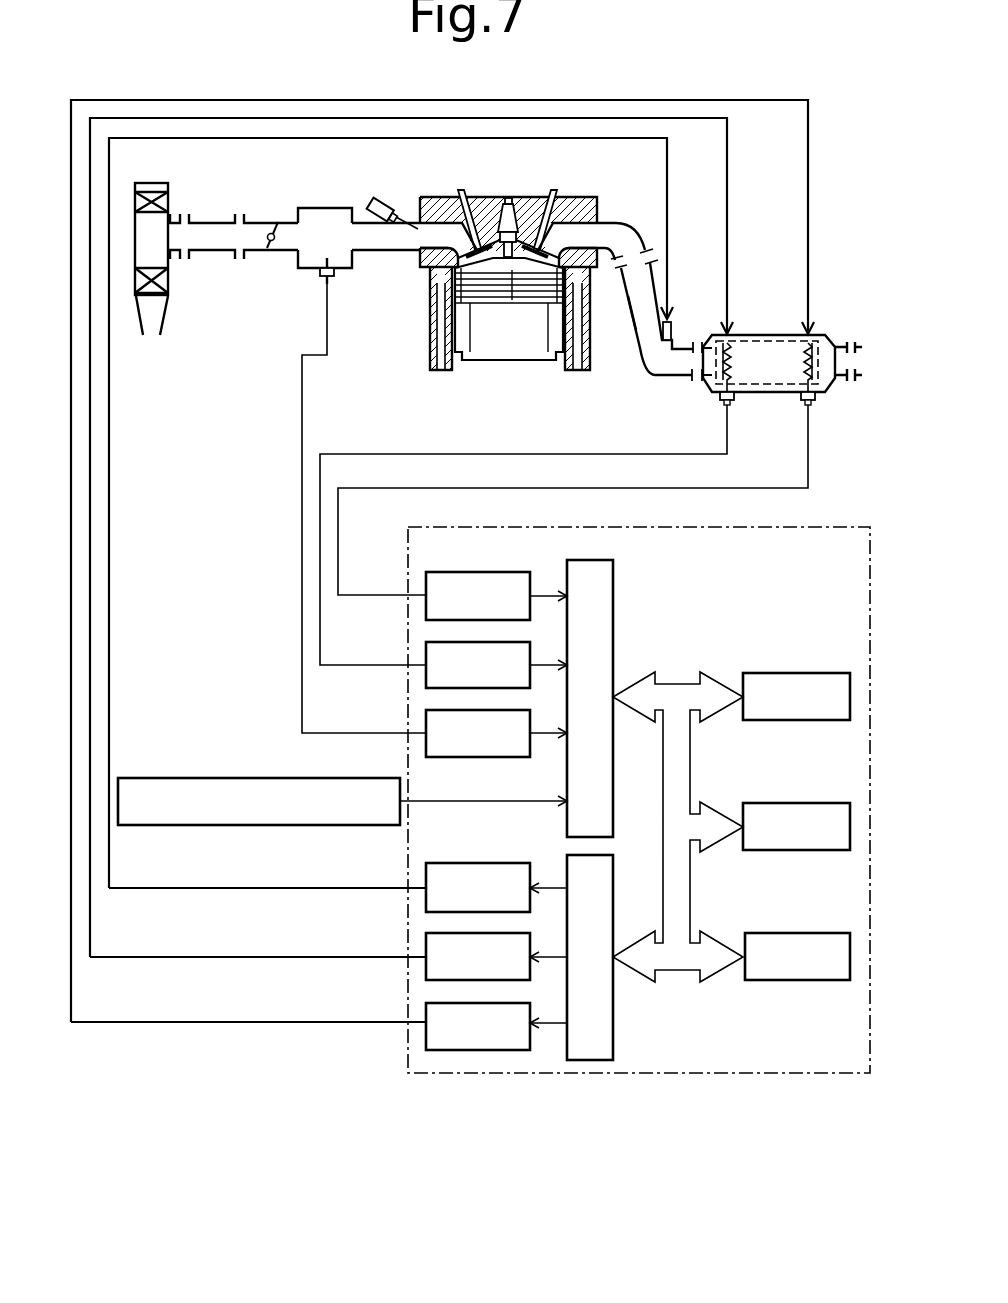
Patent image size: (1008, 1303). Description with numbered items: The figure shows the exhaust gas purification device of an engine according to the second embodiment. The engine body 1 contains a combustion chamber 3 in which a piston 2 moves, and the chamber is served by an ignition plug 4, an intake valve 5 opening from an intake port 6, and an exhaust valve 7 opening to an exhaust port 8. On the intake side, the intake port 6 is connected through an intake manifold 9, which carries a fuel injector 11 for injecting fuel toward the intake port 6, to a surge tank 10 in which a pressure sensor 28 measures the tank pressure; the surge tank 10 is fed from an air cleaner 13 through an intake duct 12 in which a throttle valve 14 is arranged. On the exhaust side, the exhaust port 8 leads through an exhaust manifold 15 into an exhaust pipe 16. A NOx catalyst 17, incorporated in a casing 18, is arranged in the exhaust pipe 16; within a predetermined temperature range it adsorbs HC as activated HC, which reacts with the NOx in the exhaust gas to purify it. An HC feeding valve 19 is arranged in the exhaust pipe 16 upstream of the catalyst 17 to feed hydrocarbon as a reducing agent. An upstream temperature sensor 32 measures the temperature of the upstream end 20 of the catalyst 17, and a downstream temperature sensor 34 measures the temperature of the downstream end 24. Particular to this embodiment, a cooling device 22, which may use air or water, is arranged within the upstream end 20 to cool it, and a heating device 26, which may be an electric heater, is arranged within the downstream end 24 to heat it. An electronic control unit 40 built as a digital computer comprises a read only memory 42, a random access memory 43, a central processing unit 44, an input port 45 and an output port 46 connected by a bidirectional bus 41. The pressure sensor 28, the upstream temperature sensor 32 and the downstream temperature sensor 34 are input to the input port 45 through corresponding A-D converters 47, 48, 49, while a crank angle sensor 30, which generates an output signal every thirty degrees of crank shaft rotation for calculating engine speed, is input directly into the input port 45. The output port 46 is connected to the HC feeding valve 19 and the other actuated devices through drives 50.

The engine body 1 is at (596, 351).
The piston 2 is at (521, 327).
The combustion chamber 3 is at (494, 268).
The ignition plug 4 is at (503, 208).
The intake valve 5 is at (458, 200).
The intake port 6 is at (431, 216).
The exhaust valve 7 is at (553, 200).
The exhaust port 8 is at (574, 226).
The intake manifold 9 is at (383, 251).
The surge tank 10 is at (310, 208).
The fuel injector 11 is at (368, 204).
The intake duct 12 is at (202, 223).
The air cleaner 13 is at (143, 183).
The throttle valve 14 is at (270, 222).
The exhaust manifold 15 is at (628, 222).
The exhaust pipe 16 is at (639, 356).
The NOx catalyst 17 is at (749, 335).
The casing 18 is at (787, 335).
The HC feeding valve 19 is at (677, 321).
The upstream end of the catalyst 20 is at (739, 364).
The cooling device 22 is at (718, 366).
The downstream end of the catalyst 24 is at (795, 364).
The heating device 26 is at (823, 347).
The pressure sensor 28 is at (331, 284).
The crank angle sensor 30 is at (173, 778).
The upstream temperature sensor 32 is at (726, 406).
The downstream temperature sensor 34 is at (812, 402).
The electronic control unit 40 is at (743, 1074).
The bidirectional bus 41 is at (676, 683).
The read only memory 42 is at (812, 673).
The random access memory 43 is at (810, 803).
The central processing unit 44 is at (810, 933).
The input port 45 is at (615, 577).
The output port 46 is at (615, 1031).
The A-D converter 47 is at (426, 729).
The A-D converter 48 is at (426, 657).
The A-D converter 49 is at (426, 587).
The drive 50 is at (463, 943).